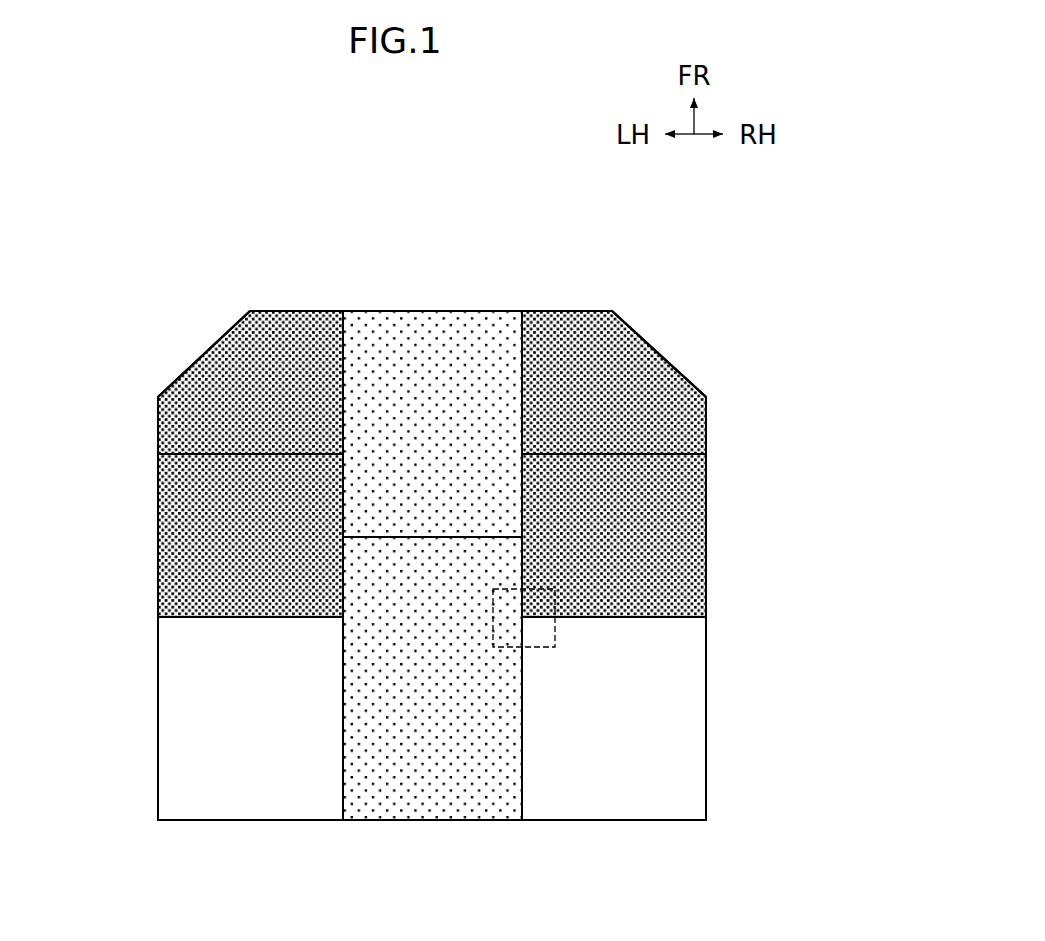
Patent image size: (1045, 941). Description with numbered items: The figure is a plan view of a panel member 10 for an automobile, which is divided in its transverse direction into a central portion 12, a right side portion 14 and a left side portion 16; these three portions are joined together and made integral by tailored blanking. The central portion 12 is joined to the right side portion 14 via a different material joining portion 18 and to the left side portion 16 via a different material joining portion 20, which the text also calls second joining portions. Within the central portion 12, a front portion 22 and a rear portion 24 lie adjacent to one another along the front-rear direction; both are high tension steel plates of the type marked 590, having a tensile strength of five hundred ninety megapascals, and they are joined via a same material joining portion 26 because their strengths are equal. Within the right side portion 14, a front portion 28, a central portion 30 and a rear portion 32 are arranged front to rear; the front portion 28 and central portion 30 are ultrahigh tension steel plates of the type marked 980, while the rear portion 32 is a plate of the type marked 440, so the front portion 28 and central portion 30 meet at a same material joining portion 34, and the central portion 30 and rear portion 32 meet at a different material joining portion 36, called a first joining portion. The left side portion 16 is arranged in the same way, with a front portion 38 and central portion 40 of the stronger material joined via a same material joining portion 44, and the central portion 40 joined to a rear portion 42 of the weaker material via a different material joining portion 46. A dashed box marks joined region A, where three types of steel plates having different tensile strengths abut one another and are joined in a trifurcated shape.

The panel member 10 is at (100, 205).
The central portion 12 is at (418, 310).
The right side portion 14 is at (576, 310).
The left side portion 16 is at (288, 310).
The different material joining portion 18 is at (522, 778).
The different material joining portion 20 is at (342, 778).
The front portion 22 is at (490, 318).
The rear portion 24 is at (448, 808).
The same material joining portion 26 is at (476, 537).
The front portion 28 is at (662, 377).
The central portion 30 is at (689, 565).
The rear portion 32 is at (690, 721).
The same material joining portion 34 is at (655, 454).
The different material joining portion 36 is at (672, 619).
The front portion 38 is at (200, 382).
The central portion 40 is at (188, 530).
The rear portion 42 is at (175, 691).
The same material joining portion 44 is at (195, 454).
The different material joining portion 46 is at (180, 617).
The joined region A is at (557, 632).
The 980 material 980 is at (432, 464).
The 590 material 590 is at (432, 565).
The 440 material 440 is at (432, 718).